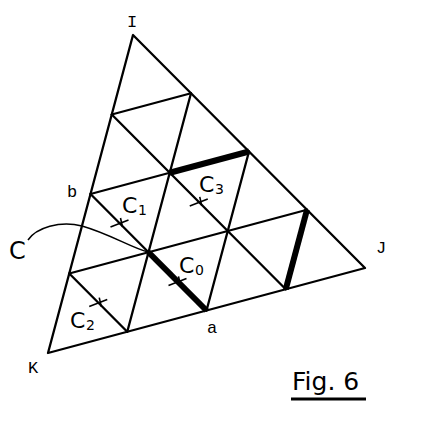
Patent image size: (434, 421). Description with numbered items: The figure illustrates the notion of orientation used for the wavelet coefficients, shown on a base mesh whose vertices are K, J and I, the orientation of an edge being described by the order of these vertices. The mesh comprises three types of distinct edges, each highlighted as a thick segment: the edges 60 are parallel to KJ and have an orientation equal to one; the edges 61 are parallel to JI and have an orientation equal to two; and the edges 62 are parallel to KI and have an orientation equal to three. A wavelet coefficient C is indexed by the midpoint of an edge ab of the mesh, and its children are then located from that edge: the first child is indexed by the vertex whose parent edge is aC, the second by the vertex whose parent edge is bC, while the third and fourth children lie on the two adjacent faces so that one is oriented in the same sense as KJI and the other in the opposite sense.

The edges parallel to (KJ) 60 is at (217, 158).
The edges parallel to (JI) 61 is at (183, 291).
The edges parallel to (KI) 62 is at (302, 243).